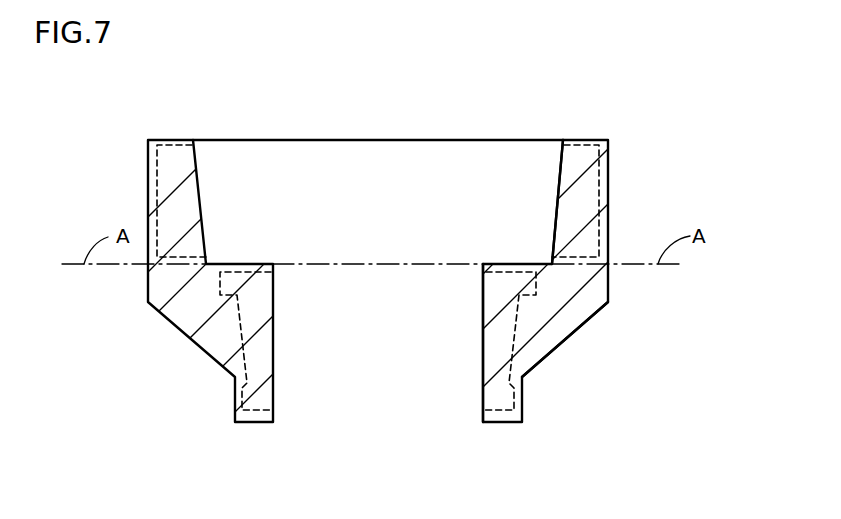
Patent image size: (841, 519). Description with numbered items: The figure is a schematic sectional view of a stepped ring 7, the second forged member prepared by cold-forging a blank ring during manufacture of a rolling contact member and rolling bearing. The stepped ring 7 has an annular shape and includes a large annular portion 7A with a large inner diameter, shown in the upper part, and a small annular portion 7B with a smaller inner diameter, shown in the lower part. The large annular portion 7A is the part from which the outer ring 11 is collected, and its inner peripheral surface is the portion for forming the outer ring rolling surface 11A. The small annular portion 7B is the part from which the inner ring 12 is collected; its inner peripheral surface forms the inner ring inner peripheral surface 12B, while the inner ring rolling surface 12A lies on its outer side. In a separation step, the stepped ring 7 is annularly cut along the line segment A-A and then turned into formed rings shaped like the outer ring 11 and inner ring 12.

The stepped ring 7 is at (625, 113).
The large annular portion 7A is at (170, 166).
The small annular portion 7B is at (200, 328).
The outer ring 11 is at (582, 200).
The outer ring rolling surface 11A is at (558, 185).
The inner ring 12 is at (502, 398).
The inner ring rolling surface 12A is at (517, 335).
The inner ring inner peripheral surface 12B is at (483, 367).